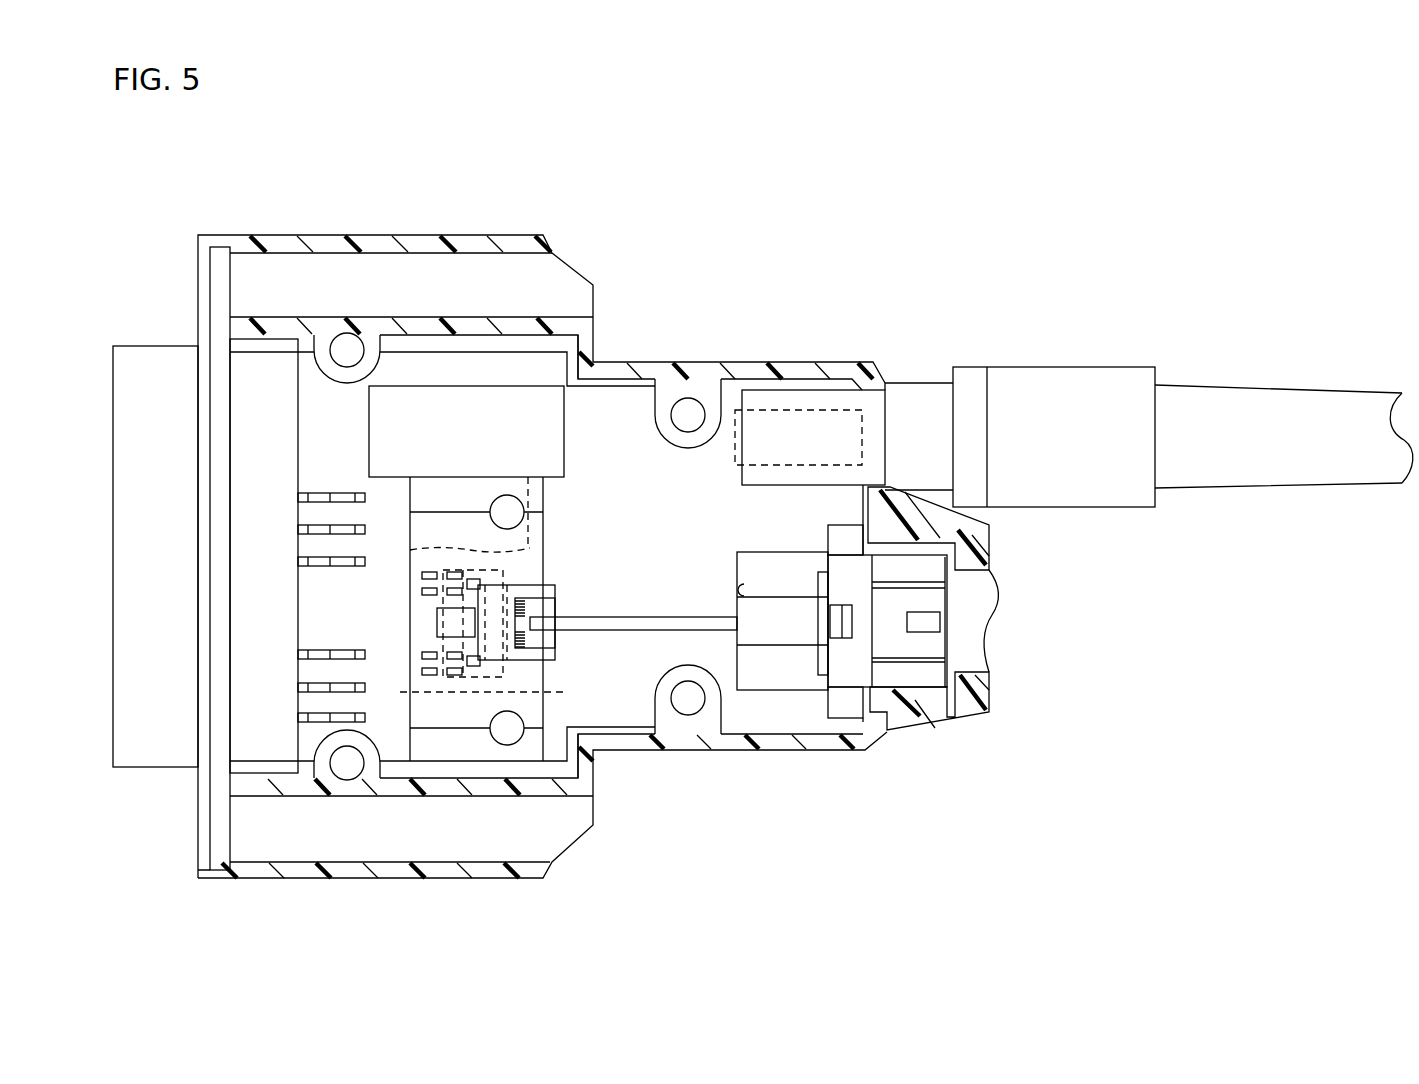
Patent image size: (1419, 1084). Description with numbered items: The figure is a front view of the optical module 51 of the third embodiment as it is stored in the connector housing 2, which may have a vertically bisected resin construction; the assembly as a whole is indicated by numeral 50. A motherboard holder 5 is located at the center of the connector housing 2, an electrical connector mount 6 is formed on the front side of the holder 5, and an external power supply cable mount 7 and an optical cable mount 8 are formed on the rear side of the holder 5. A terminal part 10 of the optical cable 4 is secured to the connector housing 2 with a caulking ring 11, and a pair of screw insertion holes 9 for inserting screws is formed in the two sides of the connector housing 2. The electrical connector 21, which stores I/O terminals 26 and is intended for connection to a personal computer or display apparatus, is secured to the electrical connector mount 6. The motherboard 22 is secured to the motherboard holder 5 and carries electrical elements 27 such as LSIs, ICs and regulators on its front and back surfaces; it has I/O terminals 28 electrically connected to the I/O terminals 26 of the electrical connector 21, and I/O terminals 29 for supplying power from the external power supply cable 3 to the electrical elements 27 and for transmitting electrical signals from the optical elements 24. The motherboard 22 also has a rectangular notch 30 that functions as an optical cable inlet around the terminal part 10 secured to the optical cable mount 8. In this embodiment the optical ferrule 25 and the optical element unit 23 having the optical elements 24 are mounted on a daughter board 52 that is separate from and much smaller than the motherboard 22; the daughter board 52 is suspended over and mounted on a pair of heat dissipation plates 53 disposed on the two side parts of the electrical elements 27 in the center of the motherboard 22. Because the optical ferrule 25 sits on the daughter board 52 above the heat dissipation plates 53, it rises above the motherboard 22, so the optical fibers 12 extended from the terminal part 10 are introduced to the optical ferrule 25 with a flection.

The connector housing 2 is at (276, 233).
The external power supply cable 3 is at (1092, 366).
The optical cable 4 is at (975, 672).
The motherboard holder 5 is at (563, 340).
The electrical connector mount 6 is at (218, 247).
The external power supply cable mount 7 is at (890, 390).
The optical cable mount 8 is at (928, 668).
The screw insertion holes 9 is at (438, 263).
The terminal part 10 is at (778, 570).
The caulking ring 11 is at (843, 682).
The optical fibers 12 is at (628, 617).
The electrical connector 21 is at (143, 346).
The motherboard 22 is at (617, 386).
The optical element unit 23 is at (402, 610).
The optical elements 24 is at (437, 636).
The optical ferrule 25 is at (533, 582).
The I/O terminals 26 is at (297, 488).
The electrical elements 27 is at (369, 405).
The I/O terminals 28 is at (338, 495).
The I/O terminals 29 is at (425, 567).
The rectangular notch 30 is at (740, 590).
The connector assembly 50 is at (763, 536).
The optical module 51 is at (603, 552).
The daughter board 52 is at (470, 503).
The heat dissipation plates 53 is at (530, 477).